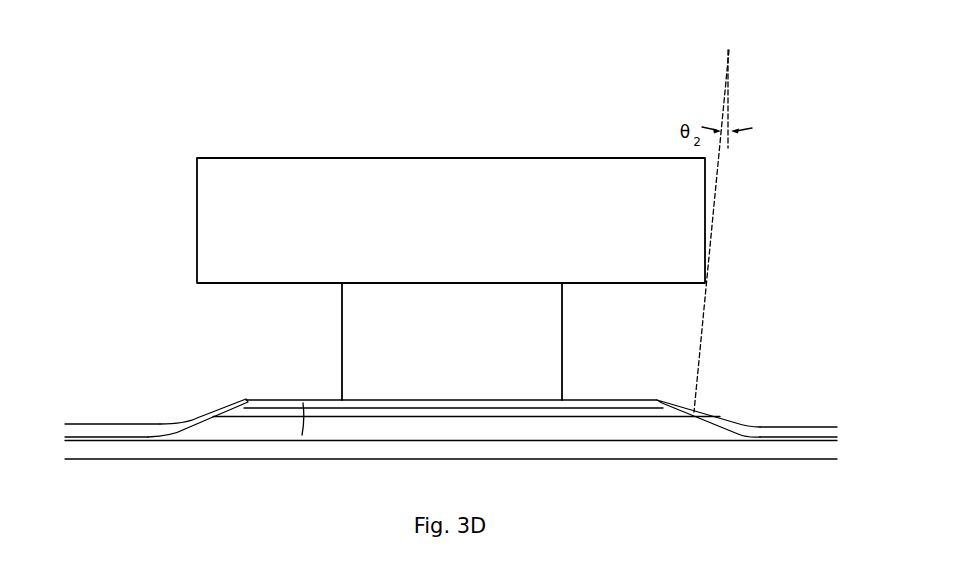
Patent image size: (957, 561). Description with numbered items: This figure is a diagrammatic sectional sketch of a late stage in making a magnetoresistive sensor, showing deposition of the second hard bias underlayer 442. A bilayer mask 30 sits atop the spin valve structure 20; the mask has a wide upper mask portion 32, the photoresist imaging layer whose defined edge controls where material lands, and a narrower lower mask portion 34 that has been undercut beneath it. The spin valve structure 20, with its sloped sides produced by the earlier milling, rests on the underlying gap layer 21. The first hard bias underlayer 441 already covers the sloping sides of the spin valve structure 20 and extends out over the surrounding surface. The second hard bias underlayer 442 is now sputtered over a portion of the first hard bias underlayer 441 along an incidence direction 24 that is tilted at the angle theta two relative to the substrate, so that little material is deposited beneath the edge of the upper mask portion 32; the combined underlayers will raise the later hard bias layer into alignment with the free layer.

The bilayer mask 30 is at (451, 242).
The upper mask portion 32 is at (451, 220).
The lower mask portion 34 is at (452, 341).
The tilt axis (angle theta2 reference) 24 is at (695, 413).
The spin valve structure 20 is at (300, 418).
The base plate 21 is at (825, 450).
The first hard bias underlayer 441 is at (207, 414).
The second hard bias underlayer 442 is at (108, 432).